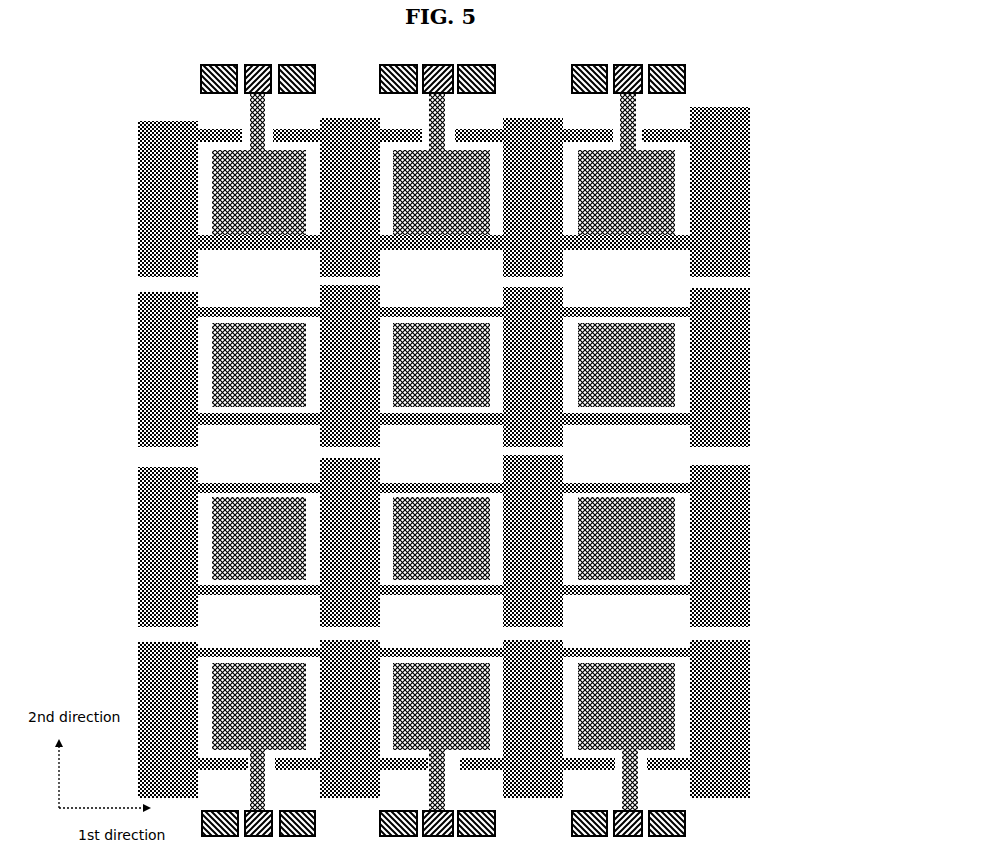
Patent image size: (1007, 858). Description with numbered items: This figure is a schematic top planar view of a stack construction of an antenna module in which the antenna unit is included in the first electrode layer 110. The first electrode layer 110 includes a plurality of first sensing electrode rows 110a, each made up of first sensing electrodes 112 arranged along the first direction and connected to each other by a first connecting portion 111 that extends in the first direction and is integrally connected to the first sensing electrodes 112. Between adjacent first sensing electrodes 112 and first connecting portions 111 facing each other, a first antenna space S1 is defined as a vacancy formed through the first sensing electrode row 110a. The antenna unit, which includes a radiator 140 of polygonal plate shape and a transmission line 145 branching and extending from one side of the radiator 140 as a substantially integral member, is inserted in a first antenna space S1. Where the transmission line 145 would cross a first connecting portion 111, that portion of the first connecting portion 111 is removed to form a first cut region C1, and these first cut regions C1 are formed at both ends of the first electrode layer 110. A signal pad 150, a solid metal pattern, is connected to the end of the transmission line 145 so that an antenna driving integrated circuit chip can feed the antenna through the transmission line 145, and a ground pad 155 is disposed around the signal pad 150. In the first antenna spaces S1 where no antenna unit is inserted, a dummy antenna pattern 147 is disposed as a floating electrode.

The first electrode layer 110 is at (102, 113).
The first sensing electrode row 110a is at (753, 200).
The first connecting portion 111 is at (657, 240).
The first sensing electrode 112 is at (740, 233).
The first antenna space S1 is at (207, 192).
The first cut region C1 is at (270, 118).
The dummy antenna pattern 147 is at (215, 548).
The radiation electrode 140 is at (660, 710).
The transmission line 145 is at (637, 773).
The signal pad 150 is at (640, 810).
The ground pad 155 is at (686, 820).